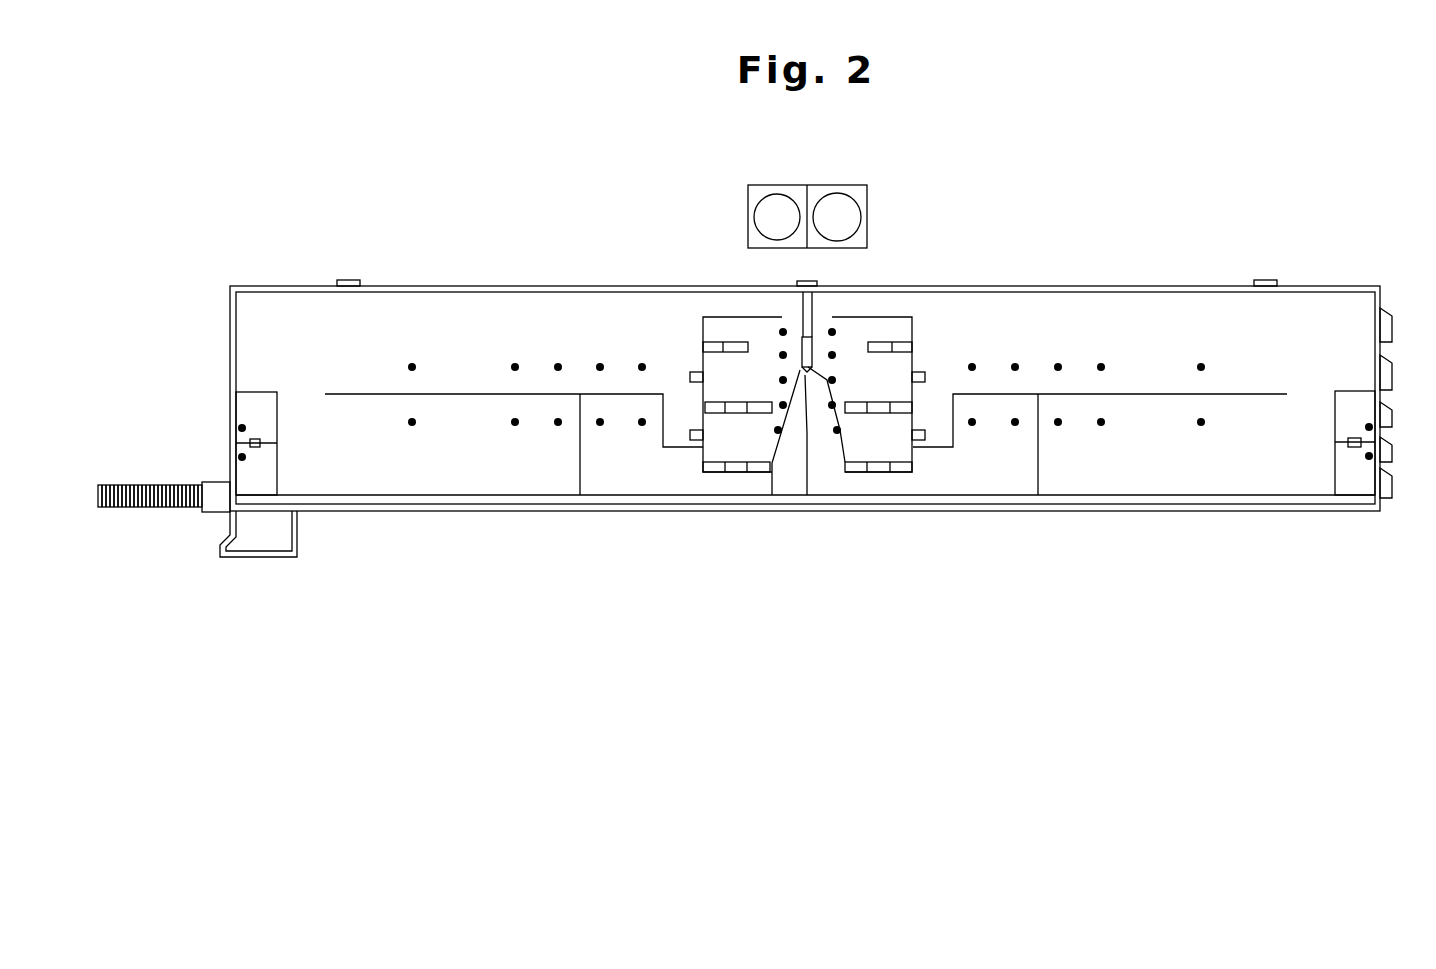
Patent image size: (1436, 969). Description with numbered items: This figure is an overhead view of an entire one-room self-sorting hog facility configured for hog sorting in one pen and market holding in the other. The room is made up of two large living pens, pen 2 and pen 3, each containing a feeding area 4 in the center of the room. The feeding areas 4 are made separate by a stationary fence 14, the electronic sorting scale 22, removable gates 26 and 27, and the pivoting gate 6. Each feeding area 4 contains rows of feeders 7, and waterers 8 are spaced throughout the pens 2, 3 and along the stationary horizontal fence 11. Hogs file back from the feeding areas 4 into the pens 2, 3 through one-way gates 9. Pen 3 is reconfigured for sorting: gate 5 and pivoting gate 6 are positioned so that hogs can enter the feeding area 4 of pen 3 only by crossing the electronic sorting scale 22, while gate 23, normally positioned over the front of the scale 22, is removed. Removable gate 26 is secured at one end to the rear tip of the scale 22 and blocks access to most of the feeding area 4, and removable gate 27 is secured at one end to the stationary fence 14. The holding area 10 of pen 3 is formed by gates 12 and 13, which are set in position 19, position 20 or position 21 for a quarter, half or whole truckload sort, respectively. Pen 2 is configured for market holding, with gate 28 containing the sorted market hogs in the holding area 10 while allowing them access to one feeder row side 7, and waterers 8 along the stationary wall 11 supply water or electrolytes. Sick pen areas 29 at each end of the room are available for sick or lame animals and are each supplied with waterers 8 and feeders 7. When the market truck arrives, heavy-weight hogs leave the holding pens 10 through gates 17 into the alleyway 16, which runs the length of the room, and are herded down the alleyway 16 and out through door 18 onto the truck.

The pen 2 is at (418, 331).
The pen 3 is at (1181, 328).
The feeding area 4 is at (711, 383).
The gate 5 is at (820, 332).
The pivoting gate 6 is at (800, 314).
The feeder 7 is at (243, 457).
The waterer 8 is at (246, 429).
The one-way gate 9 is at (690, 435).
The holding area 10 is at (633, 489).
The horizontal fence 11 is at (430, 393).
The gate 12 is at (583, 423).
The gate 13 is at (578, 470).
The stationary fence 14 is at (812, 473).
The alleyway 16 is at (810, 500).
The gate 17 is at (365, 497).
The door 18 is at (228, 512).
The position 19 is at (578, 445).
The position 20 is at (492, 445).
The position 21 is at (323, 418).
The electronic sorting scale 22 is at (813, 350).
The gate 23 is at (808, 337).
The removable gate 26 is at (828, 382).
The removable gate 27 is at (790, 397).
The gate 28 is at (770, 478).
The sick pen area 29 is at (262, 401).